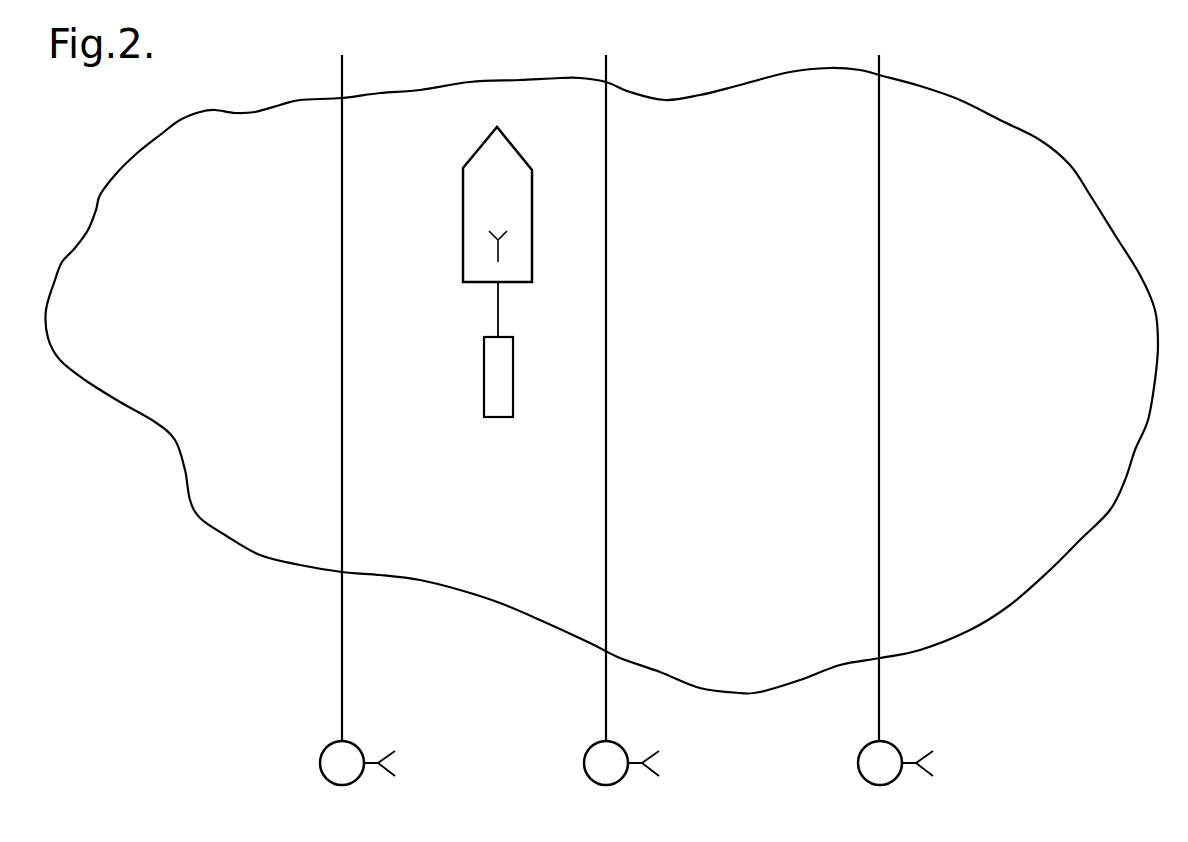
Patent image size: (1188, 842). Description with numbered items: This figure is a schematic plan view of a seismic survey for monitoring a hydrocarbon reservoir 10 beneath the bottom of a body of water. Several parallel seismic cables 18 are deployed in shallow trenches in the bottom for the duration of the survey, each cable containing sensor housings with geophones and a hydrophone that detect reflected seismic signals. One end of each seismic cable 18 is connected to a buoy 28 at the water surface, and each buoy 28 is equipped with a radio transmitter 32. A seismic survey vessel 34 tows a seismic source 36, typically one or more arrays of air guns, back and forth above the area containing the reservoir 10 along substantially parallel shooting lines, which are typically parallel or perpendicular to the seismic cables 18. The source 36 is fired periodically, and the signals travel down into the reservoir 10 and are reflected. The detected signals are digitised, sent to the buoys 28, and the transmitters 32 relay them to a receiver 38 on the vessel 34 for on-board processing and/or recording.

The hydrocarbon reservoir 10 is at (1064, 370).
The seismic cable 18 is at (342, 329).
The buoy 28 is at (322, 757).
The radio transmitter 32 is at (396, 738).
The seismic survey vessel 34 is at (484, 178).
The seismic source 36 is at (492, 378).
The receiver 38 is at (478, 258).